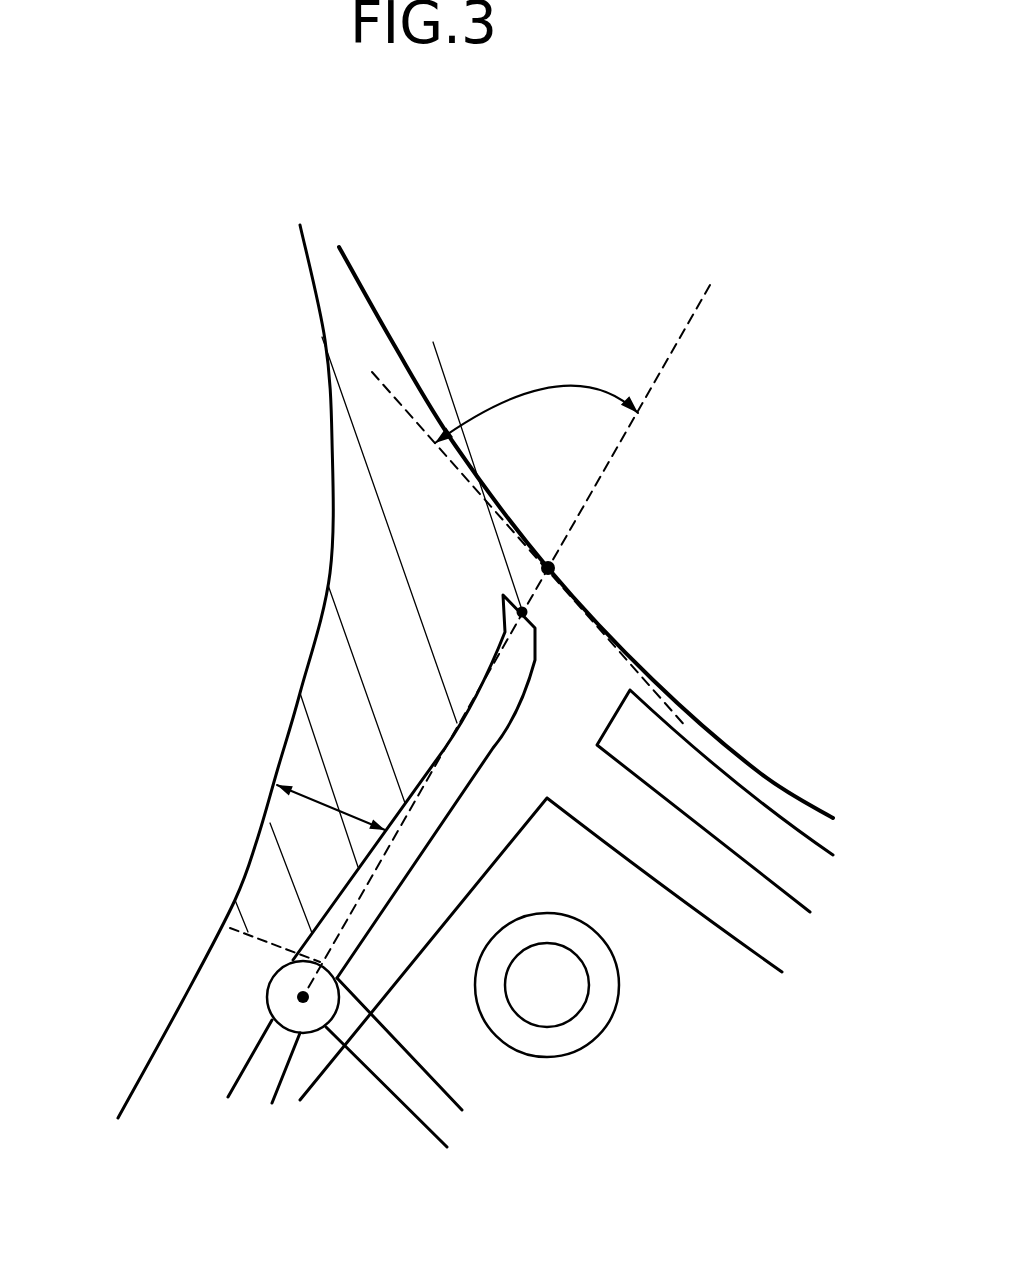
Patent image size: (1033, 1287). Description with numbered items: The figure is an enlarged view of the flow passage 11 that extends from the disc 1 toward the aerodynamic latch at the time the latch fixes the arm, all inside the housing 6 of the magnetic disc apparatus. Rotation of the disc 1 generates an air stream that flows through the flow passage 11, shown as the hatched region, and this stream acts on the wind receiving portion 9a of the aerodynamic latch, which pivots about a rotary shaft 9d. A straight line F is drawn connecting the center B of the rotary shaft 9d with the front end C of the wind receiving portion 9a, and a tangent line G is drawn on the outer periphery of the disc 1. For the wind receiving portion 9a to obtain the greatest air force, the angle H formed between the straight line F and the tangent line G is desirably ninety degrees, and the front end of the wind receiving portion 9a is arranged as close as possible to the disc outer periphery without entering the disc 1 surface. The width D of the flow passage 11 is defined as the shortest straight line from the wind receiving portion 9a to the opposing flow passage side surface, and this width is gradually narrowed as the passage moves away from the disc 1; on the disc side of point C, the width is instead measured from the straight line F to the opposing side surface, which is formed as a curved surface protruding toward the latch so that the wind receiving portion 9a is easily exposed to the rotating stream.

The disc 1 is at (363, 290).
The housing 6 is at (240, 885).
The wind receiving portion 9a is at (460, 782).
The rotary shaft 9d is at (287, 1018).
The flow passage 11 is at (372, 647).
The center of the rotary shaft B is at (303, 997).
The front end of the wind receiving portion C is at (522, 612).
The width of the flow passage D is at (323, 807).
The straight line F is at (680, 340).
The tangent line G is at (397, 400).
The angle H is at (536, 396).